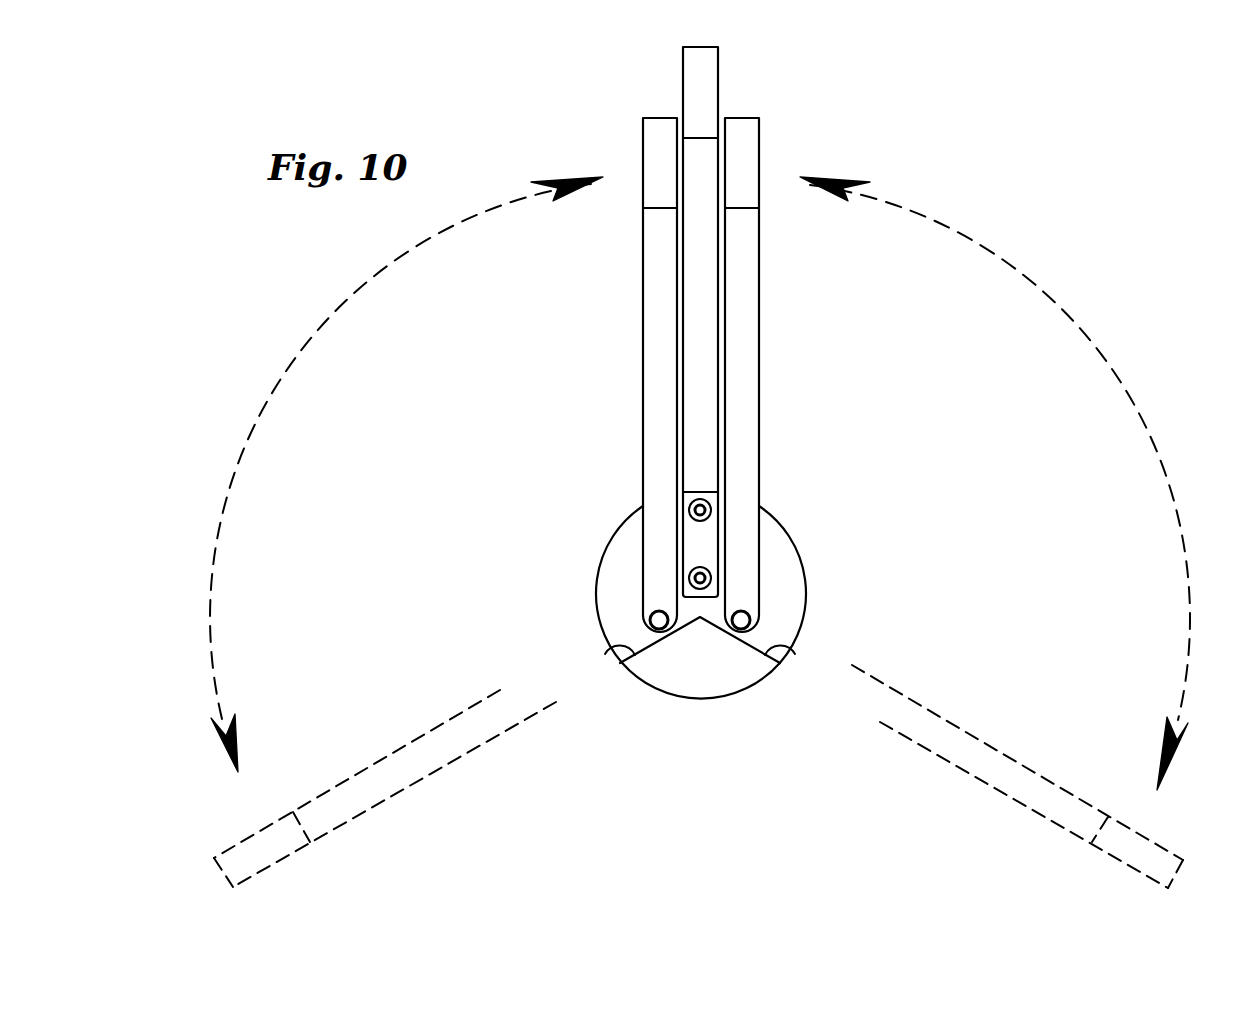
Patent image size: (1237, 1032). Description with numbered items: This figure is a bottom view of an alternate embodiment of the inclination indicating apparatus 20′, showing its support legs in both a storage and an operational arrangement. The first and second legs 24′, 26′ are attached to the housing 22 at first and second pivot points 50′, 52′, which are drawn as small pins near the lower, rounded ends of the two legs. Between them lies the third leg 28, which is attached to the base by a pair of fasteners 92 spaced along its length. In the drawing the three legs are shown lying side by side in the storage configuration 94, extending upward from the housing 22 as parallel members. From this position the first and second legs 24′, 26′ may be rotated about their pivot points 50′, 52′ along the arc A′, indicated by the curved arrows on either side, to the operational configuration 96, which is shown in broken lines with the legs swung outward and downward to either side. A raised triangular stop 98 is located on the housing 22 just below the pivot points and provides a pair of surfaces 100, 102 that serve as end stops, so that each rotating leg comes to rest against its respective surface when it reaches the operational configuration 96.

The inclination indicating apparatus 20′ is at (1024, 180).
The housing 22 is at (617, 543).
The first leg 24′ is at (647, 283).
The second leg 26′ is at (758, 290).
The third leg 28 is at (703, 82).
The first pivot point 50′ is at (647, 620).
The second pivot point 52′ is at (752, 620).
The fasteners 92 is at (706, 574).
The storage configuration 94 is at (602, 88).
The operational configuration 96 is at (428, 796).
The raised triangular stop 98 is at (697, 675).
The surface 100 is at (609, 645).
The surface 102 is at (793, 645).
The arc A′ is at (368, 286).